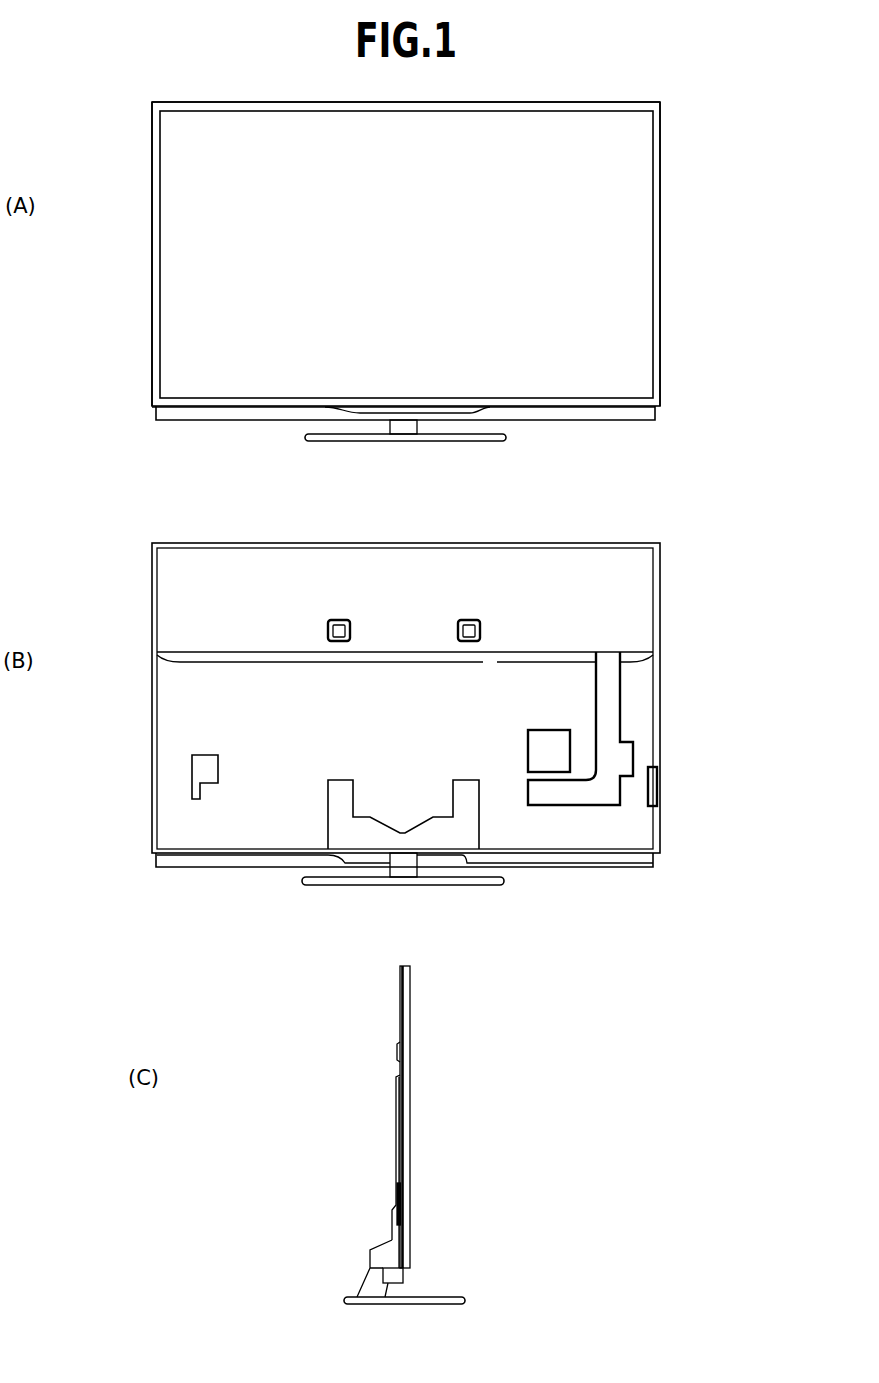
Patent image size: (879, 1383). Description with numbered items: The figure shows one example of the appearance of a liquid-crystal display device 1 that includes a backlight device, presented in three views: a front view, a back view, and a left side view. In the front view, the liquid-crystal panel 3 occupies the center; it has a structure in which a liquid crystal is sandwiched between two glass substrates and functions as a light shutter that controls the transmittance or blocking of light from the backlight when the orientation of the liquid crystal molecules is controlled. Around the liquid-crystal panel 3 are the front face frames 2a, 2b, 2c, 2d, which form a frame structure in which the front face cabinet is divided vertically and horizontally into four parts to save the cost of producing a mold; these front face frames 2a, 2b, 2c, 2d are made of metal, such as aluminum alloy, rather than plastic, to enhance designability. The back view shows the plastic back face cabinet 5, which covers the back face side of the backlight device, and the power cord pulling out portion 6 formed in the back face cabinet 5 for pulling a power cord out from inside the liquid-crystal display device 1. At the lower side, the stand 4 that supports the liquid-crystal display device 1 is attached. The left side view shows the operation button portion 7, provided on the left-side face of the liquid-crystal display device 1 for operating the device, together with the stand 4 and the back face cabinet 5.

The liquid-crystal display device 1 is at (680, 98).
The front face frame 2a is at (540, 103).
The front face frame 2b is at (152, 247).
The front face frame 2c is at (223, 406).
The front face frame 2d is at (658, 233).
The liquid-crystal panel 3 is at (623, 296).
The stand 4 is at (465, 442).
The back face cabinet 5 is at (512, 572).
The power cord pulling out portion 6 is at (192, 772).
The operation button portion 7 is at (404, 1198).